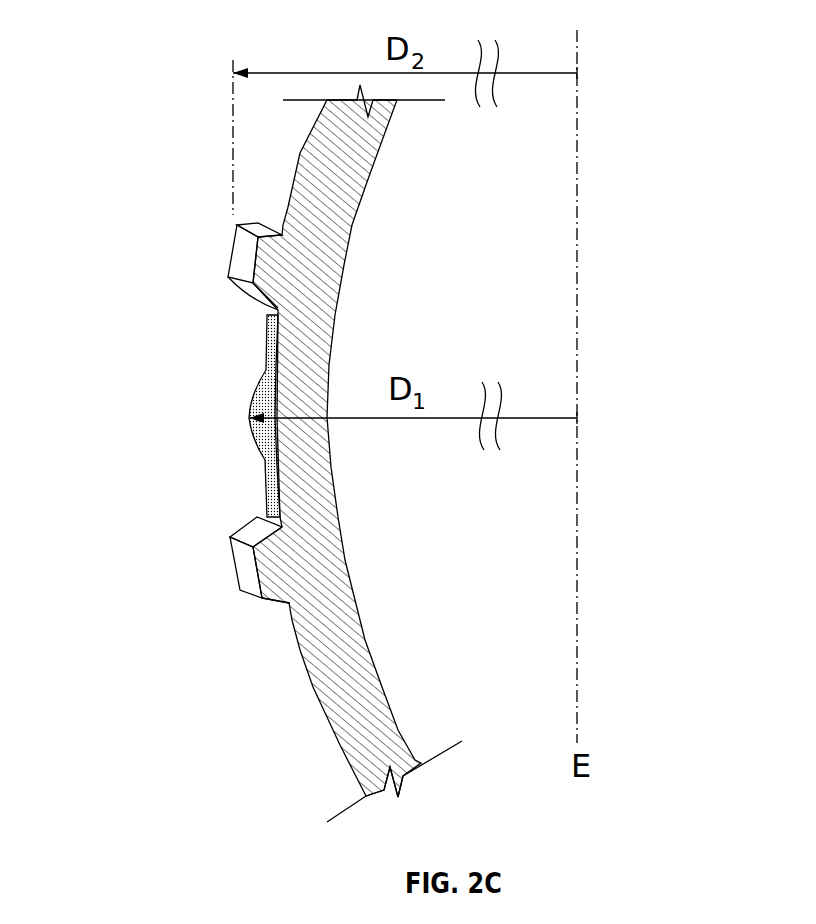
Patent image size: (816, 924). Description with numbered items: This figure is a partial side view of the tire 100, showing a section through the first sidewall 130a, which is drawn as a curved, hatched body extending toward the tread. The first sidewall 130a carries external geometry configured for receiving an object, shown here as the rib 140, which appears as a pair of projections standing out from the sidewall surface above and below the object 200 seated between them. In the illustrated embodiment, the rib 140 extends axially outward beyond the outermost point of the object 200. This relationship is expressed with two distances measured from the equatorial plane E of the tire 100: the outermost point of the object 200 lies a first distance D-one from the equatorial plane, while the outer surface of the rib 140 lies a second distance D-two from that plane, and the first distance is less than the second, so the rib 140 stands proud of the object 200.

The tire 100 is at (143, 57).
The first sidewall 130a is at (312, 693).
The rib 140 is at (243, 563).
The object 200 is at (250, 392).